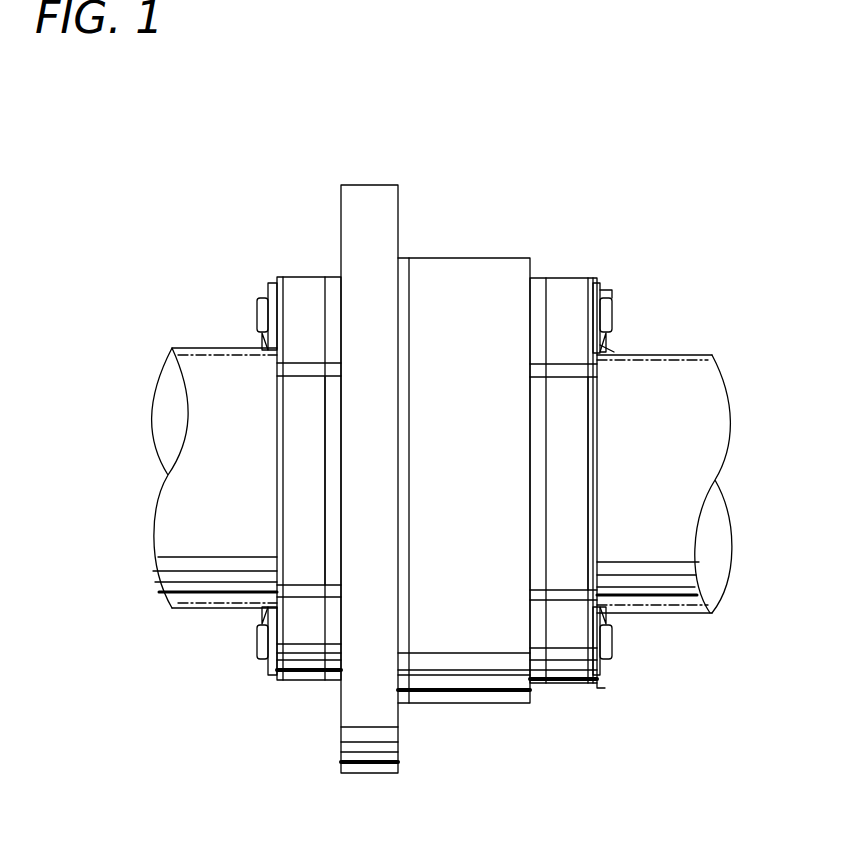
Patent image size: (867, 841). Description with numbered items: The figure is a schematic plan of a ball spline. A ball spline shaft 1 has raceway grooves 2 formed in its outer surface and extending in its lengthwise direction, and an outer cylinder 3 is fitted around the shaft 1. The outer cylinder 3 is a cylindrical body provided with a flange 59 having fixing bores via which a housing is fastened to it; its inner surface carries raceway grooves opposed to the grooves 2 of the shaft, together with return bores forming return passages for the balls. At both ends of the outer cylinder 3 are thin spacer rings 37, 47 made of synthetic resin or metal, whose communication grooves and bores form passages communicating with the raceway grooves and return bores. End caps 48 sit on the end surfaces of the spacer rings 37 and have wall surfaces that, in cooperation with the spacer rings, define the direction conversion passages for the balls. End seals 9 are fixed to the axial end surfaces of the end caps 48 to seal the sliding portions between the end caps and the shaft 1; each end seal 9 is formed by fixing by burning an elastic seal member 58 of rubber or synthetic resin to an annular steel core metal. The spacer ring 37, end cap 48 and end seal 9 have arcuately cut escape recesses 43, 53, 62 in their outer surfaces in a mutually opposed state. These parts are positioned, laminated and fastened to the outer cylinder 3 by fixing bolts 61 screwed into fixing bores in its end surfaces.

The ball spline shaft 1 is at (200, 436).
The raceway grooves 2 is at (211, 345).
The outer cylinder 3 is at (462, 285).
The end seal 9 is at (598, 687).
The spacer ring 37 is at (538, 290).
The escape recesses 43 is at (328, 378).
The spacer ring 47 is at (594, 280).
The end cap 48 is at (300, 290).
The escape recesses 53 is at (303, 378).
The seal member 58 is at (612, 342).
The flange 59 is at (372, 205).
The fixing bolt 61 is at (608, 662).
The escape recesses 62 is at (262, 297).